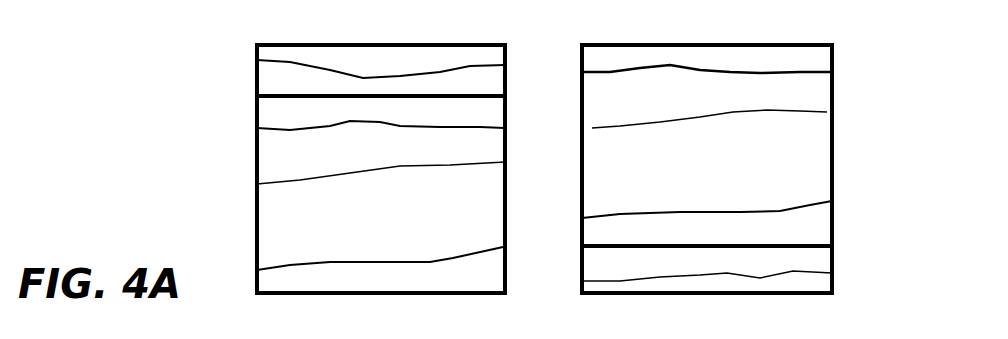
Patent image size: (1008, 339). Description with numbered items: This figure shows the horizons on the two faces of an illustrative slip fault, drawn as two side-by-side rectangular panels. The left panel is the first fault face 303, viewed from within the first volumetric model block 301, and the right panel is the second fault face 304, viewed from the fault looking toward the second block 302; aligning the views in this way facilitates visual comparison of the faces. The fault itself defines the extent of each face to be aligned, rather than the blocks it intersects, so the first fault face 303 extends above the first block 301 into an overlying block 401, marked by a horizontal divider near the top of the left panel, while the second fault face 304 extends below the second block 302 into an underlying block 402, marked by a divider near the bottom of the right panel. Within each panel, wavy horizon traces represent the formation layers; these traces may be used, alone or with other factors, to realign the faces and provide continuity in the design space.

The overlying block 401 is at (250, 47).
The first volumetric model block 301 is at (250, 98).
The first fault face 303 is at (380, 190).
The second fault face 304 is at (707, 190).
The second block 302 is at (843, 47).
The underlying block 402 is at (843, 248).